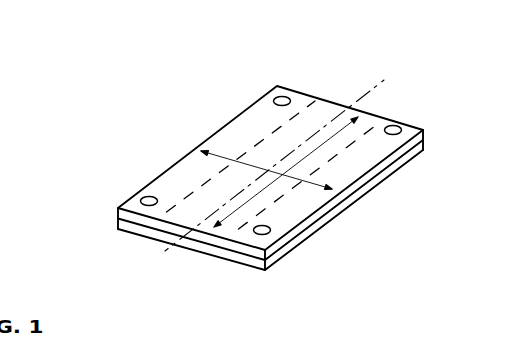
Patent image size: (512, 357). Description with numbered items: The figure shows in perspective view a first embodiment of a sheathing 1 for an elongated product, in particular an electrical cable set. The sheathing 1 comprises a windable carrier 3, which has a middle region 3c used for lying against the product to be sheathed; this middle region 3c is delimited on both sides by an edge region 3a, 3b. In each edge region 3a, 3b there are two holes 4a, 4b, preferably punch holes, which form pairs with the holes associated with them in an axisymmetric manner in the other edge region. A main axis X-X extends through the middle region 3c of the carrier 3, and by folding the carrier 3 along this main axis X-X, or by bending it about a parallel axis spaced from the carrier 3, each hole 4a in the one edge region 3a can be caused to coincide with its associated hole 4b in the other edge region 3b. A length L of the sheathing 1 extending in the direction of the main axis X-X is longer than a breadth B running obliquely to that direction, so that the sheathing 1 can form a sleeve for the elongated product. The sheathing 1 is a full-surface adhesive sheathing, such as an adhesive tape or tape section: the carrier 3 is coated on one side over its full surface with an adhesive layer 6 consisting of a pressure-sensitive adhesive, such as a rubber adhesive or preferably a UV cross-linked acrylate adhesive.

The sheathing 1 is at (401, 214).
The carrier 3 is at (306, 171).
The edge region 3a is at (246, 140).
The edge region 3b is at (350, 166).
The middle region 3c is at (320, 114).
The hole 4a is at (282, 96).
The hole 4b is at (396, 125).
The adhesive layer 6 is at (425, 139).
The main axis X is at (385, 84).
The length L is at (226, 220).
The breadth B is at (313, 184).